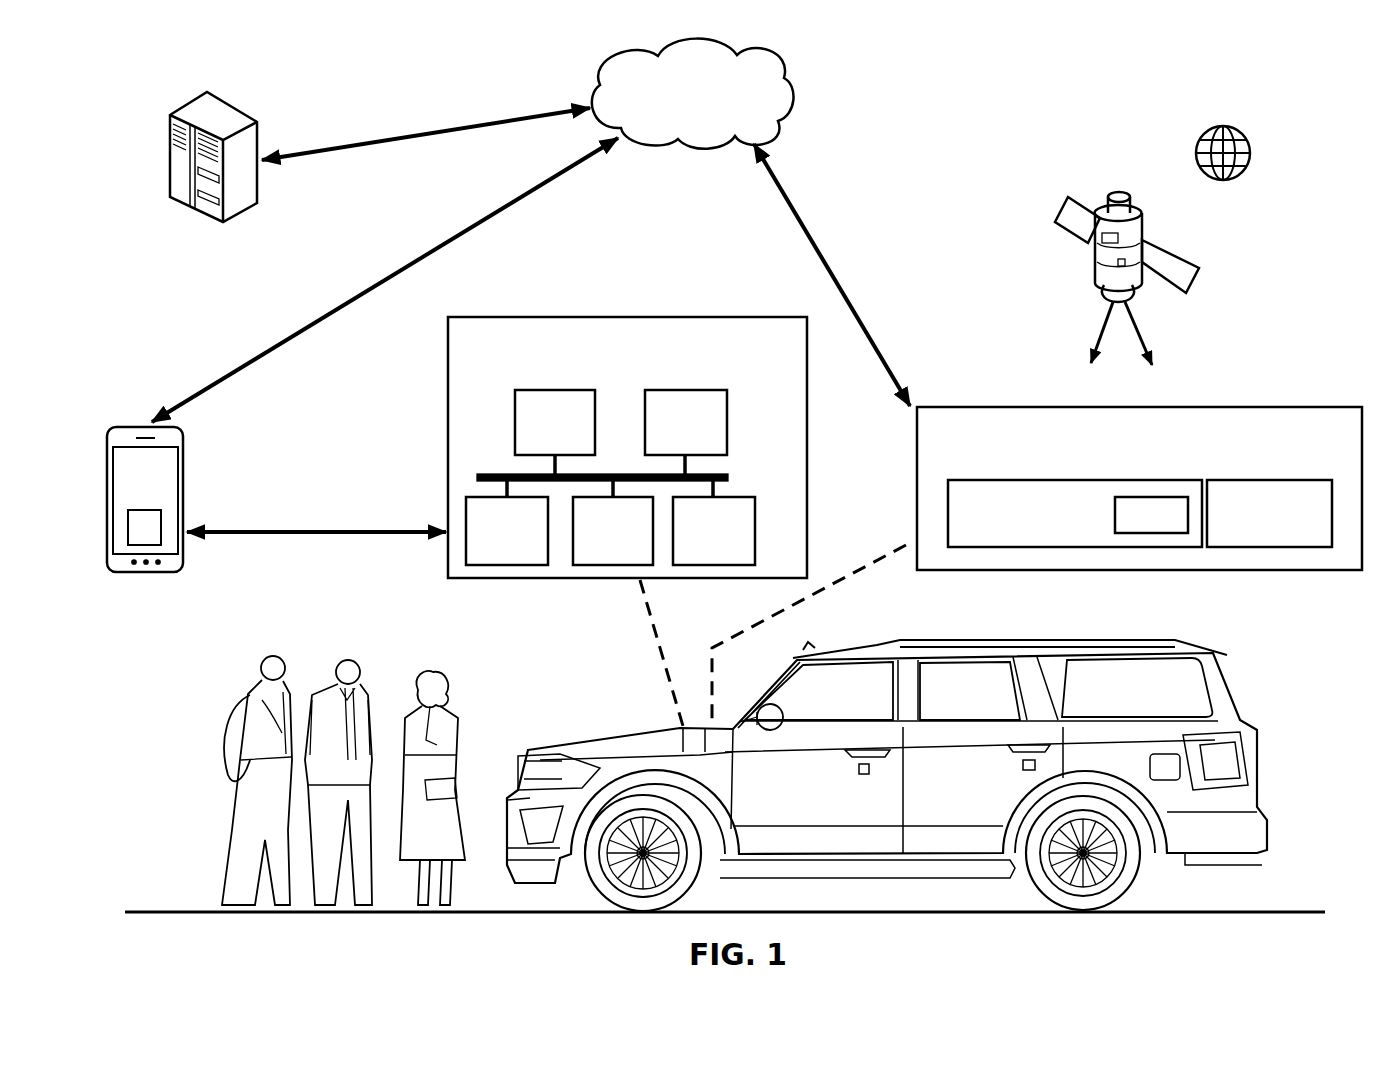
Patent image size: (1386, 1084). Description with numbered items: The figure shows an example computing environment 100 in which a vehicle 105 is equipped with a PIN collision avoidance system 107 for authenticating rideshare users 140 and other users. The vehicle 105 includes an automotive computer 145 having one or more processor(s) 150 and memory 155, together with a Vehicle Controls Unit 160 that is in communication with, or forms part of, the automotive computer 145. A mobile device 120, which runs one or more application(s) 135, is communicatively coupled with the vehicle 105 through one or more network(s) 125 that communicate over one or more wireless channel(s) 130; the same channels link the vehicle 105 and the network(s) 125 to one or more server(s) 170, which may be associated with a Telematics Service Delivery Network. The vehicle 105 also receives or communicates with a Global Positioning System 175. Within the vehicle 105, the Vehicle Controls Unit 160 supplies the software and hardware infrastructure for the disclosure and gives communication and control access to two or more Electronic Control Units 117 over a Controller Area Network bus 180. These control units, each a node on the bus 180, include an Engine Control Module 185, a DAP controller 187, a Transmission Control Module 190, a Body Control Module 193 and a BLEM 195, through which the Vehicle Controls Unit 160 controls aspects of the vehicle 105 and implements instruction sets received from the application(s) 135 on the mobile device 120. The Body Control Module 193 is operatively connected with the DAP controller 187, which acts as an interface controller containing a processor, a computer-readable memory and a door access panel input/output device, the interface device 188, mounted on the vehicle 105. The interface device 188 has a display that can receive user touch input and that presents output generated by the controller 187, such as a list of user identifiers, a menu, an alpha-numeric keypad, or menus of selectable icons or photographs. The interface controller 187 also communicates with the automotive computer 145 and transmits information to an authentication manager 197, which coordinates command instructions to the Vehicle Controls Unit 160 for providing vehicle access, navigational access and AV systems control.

The computing environment 100 is at (1142, 135).
The vehicle 105 is at (925, 757).
The PIN collision avoidance system 107 is at (1266, 674).
The Electronic Control Units 117 is at (775, 457).
The mobile device 120 is at (185, 427).
The network 125 is at (693, 94).
The wireless channel 130 is at (430, 250).
The application 135 is at (163, 523).
The rideshare users 140 is at (220, 652).
The automotive computer 145 is at (1139, 488).
The processor 150 is at (1075, 513).
The memory 155 is at (1269, 513).
The Vehicle Controls Unit 160 is at (588, 447).
The server 170 is at (223, 223).
The Global Positioning System 175 is at (1142, 217).
The Controller Area Network bus 180 is at (477, 478).
The Engine Control Module 185 is at (555, 422).
The DAP controller 187 is at (686, 422).
The interface device 188 is at (865, 745).
The Transmission Control Module 190 is at (507, 531).
The Body Control Module 193 is at (613, 531).
The BLEM 195 is at (714, 531).
The authentication manager 197 is at (1151, 515).